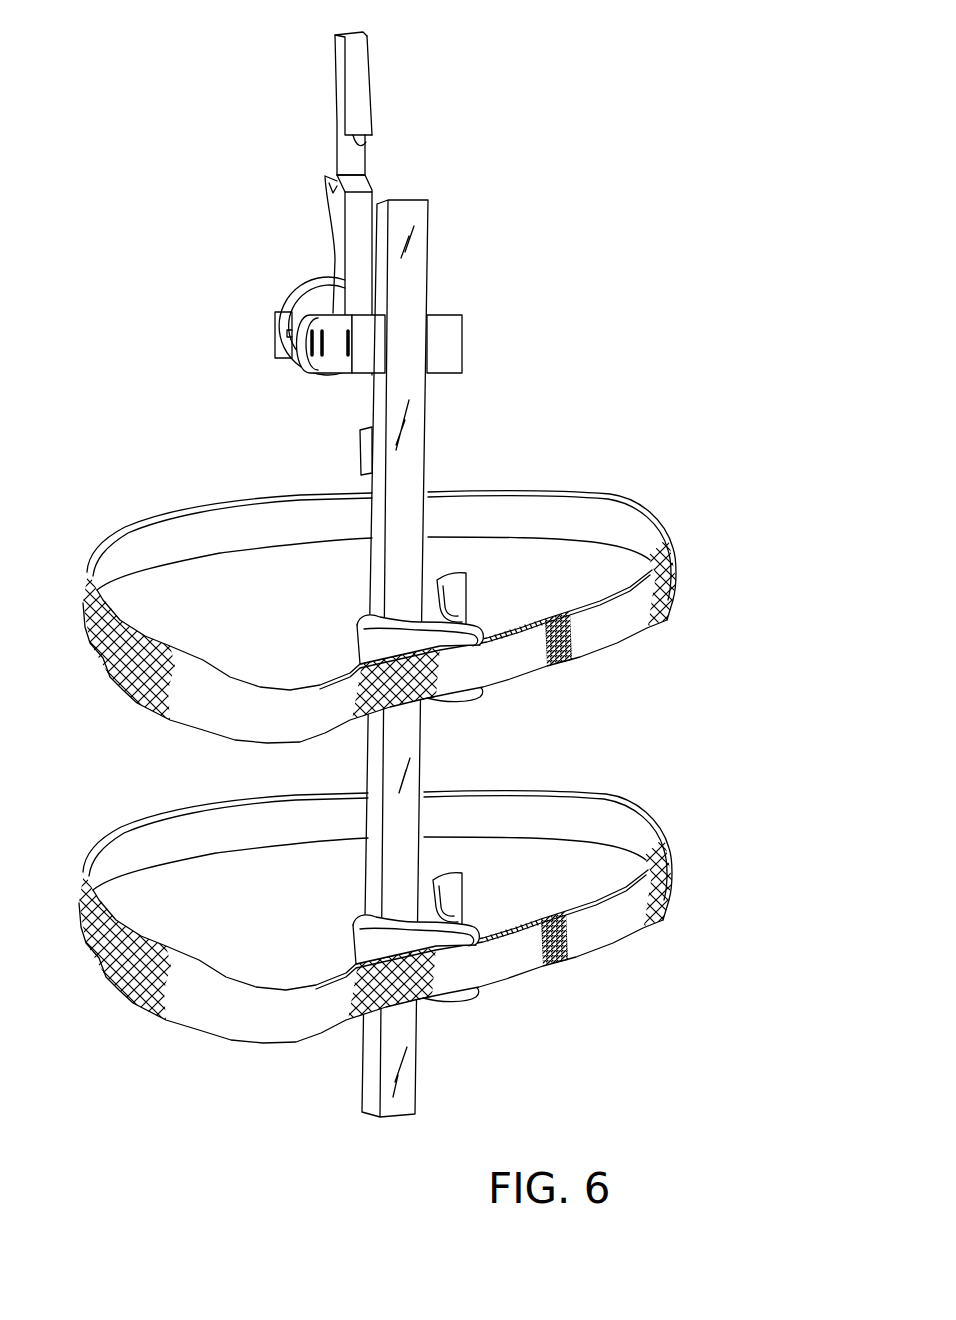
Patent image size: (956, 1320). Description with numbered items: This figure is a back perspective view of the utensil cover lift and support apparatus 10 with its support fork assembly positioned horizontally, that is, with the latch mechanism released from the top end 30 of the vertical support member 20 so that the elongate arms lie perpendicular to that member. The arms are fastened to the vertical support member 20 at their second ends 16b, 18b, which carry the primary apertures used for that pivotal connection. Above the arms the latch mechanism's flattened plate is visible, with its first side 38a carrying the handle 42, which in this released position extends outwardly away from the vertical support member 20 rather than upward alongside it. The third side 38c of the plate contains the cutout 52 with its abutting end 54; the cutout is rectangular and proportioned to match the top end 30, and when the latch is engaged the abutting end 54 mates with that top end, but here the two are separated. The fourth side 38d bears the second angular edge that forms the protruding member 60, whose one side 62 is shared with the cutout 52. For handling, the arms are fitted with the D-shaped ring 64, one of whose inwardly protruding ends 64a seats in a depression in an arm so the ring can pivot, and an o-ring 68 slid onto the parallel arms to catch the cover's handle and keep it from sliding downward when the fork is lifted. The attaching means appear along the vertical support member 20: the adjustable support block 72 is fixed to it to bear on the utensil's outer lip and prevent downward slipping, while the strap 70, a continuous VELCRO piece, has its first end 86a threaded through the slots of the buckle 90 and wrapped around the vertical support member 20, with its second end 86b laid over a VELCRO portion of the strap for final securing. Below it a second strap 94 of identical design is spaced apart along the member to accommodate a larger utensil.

The utensil cover lift and support apparatus 10 is at (232, 1102).
The second end of first elongate arm 16b is at (353, 377).
The second end of second elongate arm 18b is at (462, 343).
The vertical support member 20 is at (428, 442).
The top end of vertical support member 30 is at (430, 218).
The first side of flatten plate 38a is at (336, 113).
The third side of flatten plate 38c is at (334, 245).
The fourth side of flatten plate 38d is at (365, 33).
The handle 42 is at (326, 197).
The cutout 52 is at (338, 153).
The abutting end 54 is at (373, 165).
The protruding member 60 is at (373, 95).
The side of protruding member 62 is at (368, 148).
The D-shaped ring 64 is at (287, 298).
The inwardly protruding end of D-shaped ring 64a is at (275, 345).
The o-ring 68 is at (303, 373).
The strap 70 is at (205, 497).
The adjustable support block 72 is at (360, 442).
The first end of strap 86a is at (467, 587).
The second end of strap 86b is at (519, 684).
The buckle 90 is at (440, 984).
The second strap 94 is at (363, 916).